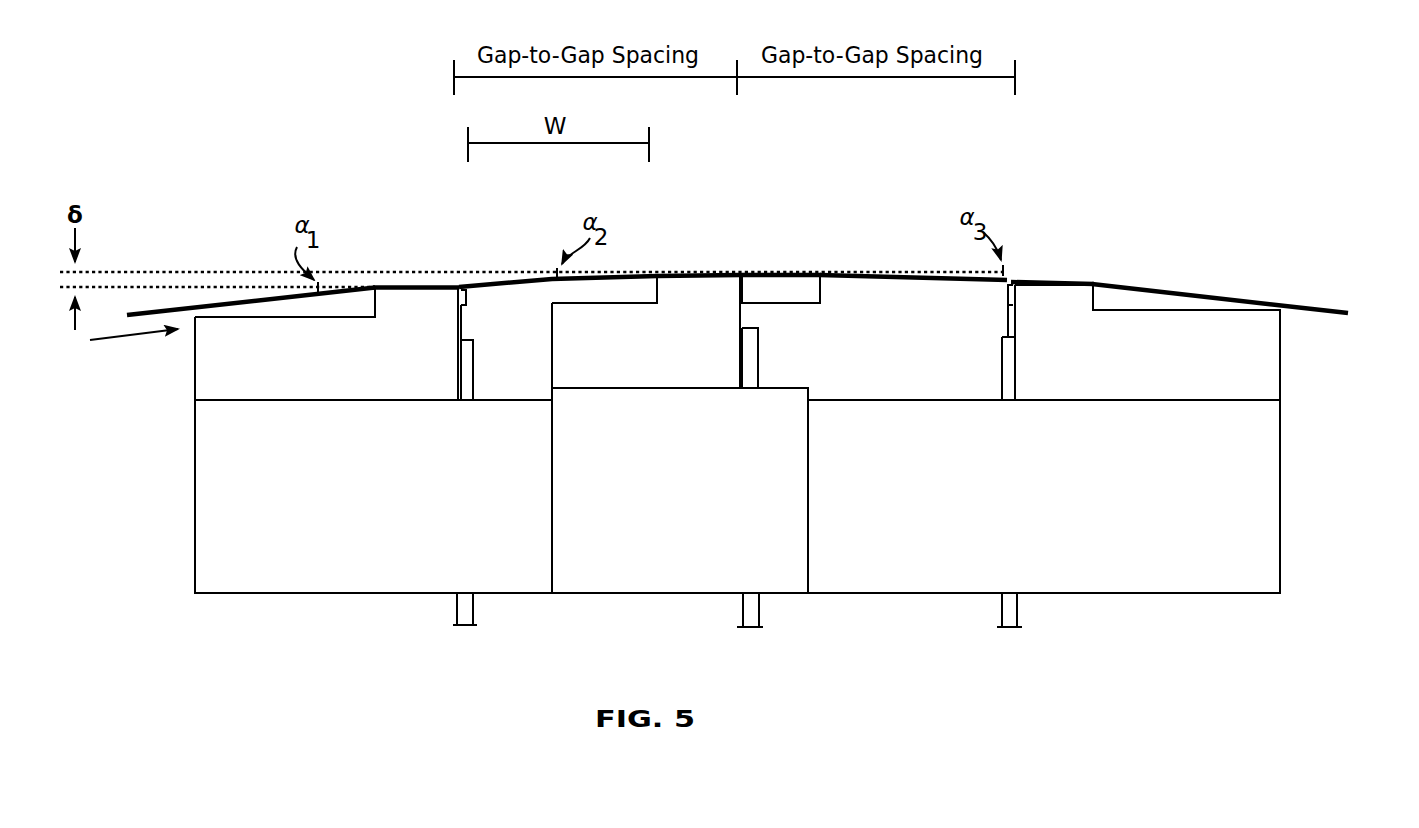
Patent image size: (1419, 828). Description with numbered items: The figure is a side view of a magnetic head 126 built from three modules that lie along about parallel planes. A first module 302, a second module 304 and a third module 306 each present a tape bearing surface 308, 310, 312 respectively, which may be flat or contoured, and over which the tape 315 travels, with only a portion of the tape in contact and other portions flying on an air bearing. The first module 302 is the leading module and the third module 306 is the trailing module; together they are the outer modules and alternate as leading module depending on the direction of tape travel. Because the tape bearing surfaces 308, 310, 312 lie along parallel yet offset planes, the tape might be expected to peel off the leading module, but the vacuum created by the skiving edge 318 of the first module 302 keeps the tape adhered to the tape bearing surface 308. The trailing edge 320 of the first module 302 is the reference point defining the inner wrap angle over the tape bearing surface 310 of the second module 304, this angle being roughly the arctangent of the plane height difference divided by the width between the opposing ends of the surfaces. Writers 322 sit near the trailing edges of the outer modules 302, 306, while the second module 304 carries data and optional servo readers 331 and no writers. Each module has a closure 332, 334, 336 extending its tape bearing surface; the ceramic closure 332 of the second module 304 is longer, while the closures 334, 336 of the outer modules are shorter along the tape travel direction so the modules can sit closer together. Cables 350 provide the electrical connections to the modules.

The magnetic head 126 is at (357, 150).
The first module 302 is at (195, 365).
The second module 304 is at (632, 300).
The third module 306 is at (1280, 362).
The tape bearing surface of first module 308 is at (428, 276).
The tape bearing surface of second module 310 is at (684, 264).
The tape bearing surface of third module 312 is at (1047, 272).
The tape 315 is at (1147, 286).
The skiving edge 318 is at (362, 298).
The trailing edge of leading module 320 is at (478, 293).
The writers 322 is at (459, 272).
The data and optional servo readers 331 is at (741, 262).
The closure of second module 332 is at (787, 305).
The closure of first module 334 is at (467, 298).
The closure of third module 336 is at (1007, 292).
The cables 350 is at (473, 612).